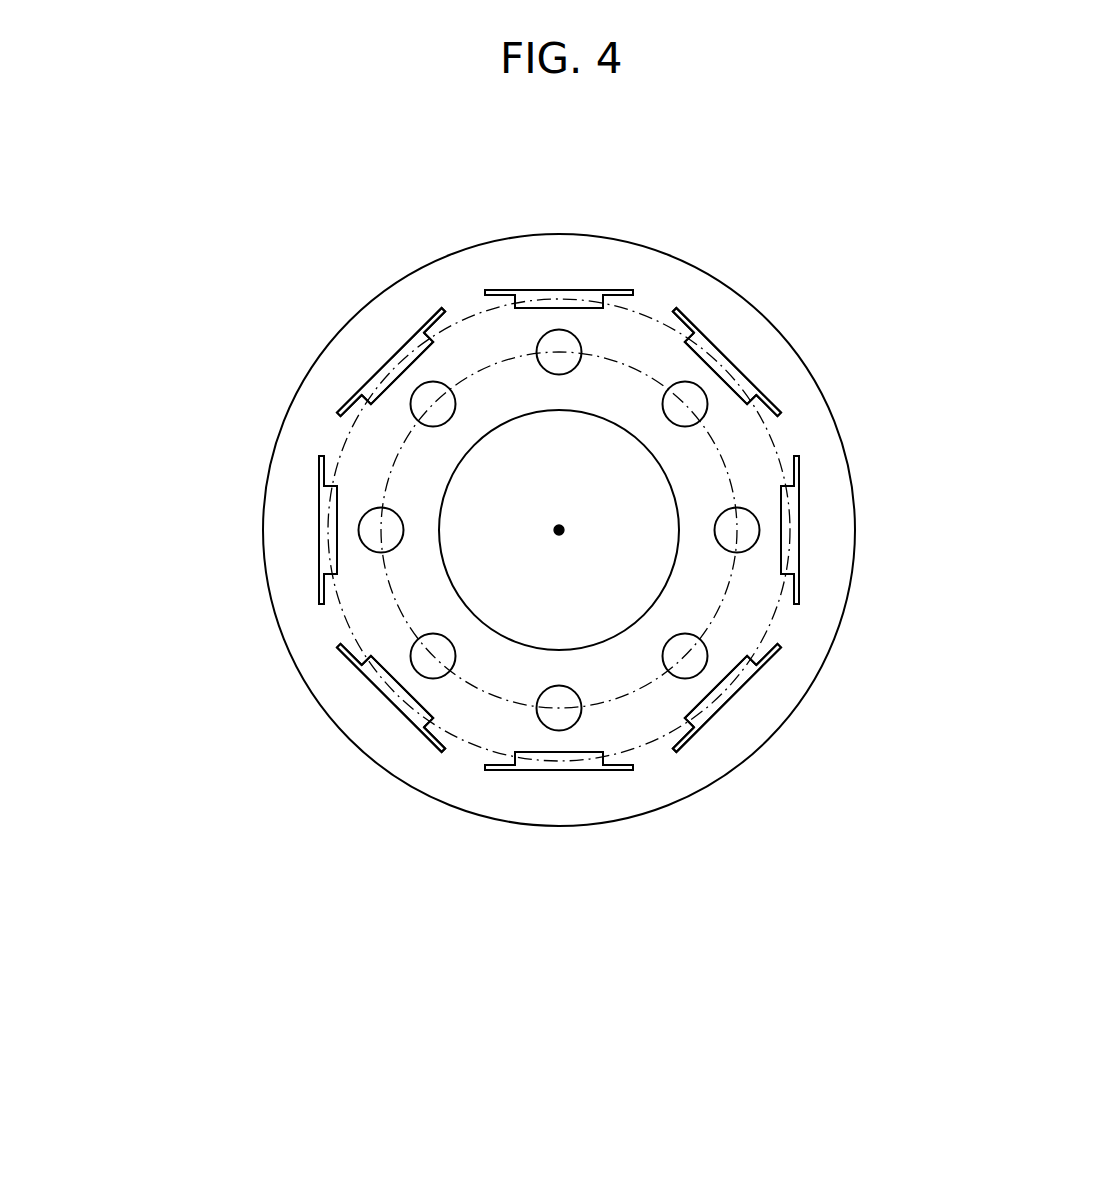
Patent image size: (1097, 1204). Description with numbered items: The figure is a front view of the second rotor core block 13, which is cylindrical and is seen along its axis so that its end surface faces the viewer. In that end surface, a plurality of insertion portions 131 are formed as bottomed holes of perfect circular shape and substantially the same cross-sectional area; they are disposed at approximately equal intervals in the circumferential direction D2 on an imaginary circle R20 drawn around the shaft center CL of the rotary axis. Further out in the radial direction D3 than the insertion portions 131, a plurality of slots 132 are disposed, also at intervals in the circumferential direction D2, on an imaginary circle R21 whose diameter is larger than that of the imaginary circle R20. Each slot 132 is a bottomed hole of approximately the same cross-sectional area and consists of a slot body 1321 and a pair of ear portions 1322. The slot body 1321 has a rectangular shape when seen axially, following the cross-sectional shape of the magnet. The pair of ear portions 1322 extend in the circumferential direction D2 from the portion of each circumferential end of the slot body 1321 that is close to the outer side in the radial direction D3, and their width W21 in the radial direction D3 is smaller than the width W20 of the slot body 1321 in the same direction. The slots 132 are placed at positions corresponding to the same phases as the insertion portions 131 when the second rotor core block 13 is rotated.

The second rotor core block 13 is at (666, 247).
The insertion portion 131 is at (538, 345).
The slot 132 is at (604, 288).
The slot body 1321 is at (543, 290).
The ear portion 1322 is at (497, 290).
The imaginary circle R20 is at (399, 609).
The imaginary circle R21 is at (470, 745).
The width of the slot body W20 is at (730, 493).
The width of the ear portions W21 is at (740, 459).
The shaft center CL is at (553, 536).
The circumferential direction D2 is at (604, 1023).
The radial direction D3 is at (222, 866).